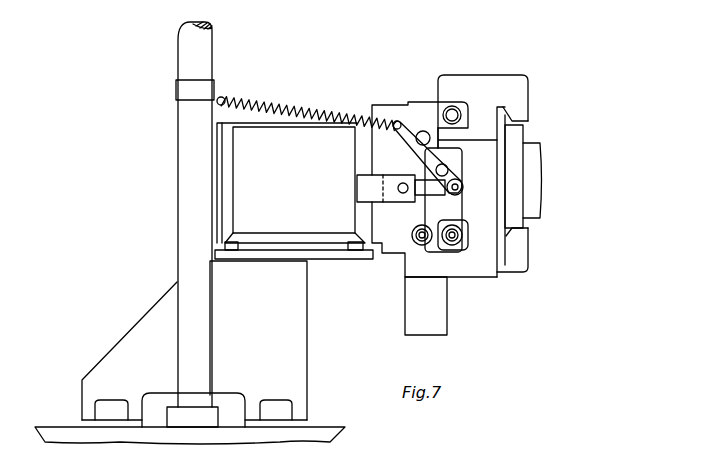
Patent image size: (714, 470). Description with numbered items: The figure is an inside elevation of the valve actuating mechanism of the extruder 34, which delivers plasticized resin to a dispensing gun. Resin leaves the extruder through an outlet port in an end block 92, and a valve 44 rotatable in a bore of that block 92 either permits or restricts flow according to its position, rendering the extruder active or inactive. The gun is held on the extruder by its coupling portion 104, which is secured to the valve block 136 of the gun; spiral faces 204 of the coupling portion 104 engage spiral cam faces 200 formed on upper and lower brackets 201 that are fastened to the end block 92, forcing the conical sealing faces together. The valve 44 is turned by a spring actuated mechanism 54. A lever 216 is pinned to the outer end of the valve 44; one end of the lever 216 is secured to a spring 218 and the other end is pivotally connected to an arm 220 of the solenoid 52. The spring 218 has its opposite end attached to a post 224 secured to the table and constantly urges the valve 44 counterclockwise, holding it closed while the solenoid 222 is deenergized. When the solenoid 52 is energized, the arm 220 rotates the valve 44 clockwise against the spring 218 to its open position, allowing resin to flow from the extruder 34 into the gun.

The post 224 is at (176, 142).
The spring 218 is at (305, 108).
The solenoid 222 is at (372, 203).
The solenoid 52 is at (288, 228).
The extruder 34 is at (385, 104).
The spring actuated mechanism 54 is at (363, 96).
The lever 216 is at (408, 150).
The valve 44 is at (458, 184).
The arm 220 is at (428, 207).
The brackets 201 is at (488, 74).
The spiral cam faces 200 is at (498, 108).
The end block 92 is at (487, 148).
The coupling portion 104 is at (512, 133).
The valve block 136 is at (537, 150).
The spiral faces 204 is at (512, 121).